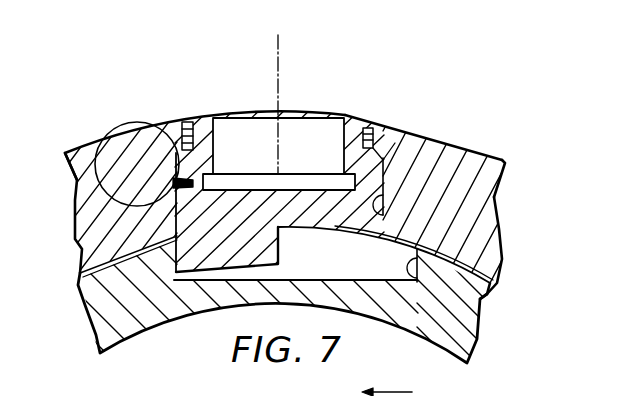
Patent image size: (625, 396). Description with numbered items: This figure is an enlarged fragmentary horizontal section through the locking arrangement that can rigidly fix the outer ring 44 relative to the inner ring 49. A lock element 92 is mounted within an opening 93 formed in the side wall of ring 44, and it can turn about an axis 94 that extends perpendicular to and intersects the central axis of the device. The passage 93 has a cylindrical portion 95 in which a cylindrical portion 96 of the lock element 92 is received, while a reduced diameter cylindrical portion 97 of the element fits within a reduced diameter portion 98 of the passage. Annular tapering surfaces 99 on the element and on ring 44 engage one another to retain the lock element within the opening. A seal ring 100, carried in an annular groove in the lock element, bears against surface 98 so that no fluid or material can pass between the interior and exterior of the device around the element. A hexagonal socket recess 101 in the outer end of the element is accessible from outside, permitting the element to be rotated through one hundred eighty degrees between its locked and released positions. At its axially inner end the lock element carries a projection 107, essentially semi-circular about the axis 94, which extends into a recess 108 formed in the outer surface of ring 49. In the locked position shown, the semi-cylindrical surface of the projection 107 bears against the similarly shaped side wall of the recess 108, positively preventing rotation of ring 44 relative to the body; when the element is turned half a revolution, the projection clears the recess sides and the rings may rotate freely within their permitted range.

The ring 44 is at (499, 160).
The ring 49 is at (94, 348).
The lock element 92 is at (345, 116).
The opening 93 is at (93, 143).
The axis 94 is at (277, 55).
The cylindrical portion 95 is at (490, 200).
The cylindrical portion 96 is at (383, 182).
The reduced diameter cylindrical portion 97 is at (383, 155).
The reduced diameter portion 98 is at (200, 117).
The annular tapering surfaces 99 is at (143, 124).
The seal ring 100 is at (373, 148).
The hexagonal socket recess 101 is at (248, 136).
The projection 107 is at (278, 253).
The recess 108 is at (485, 296).